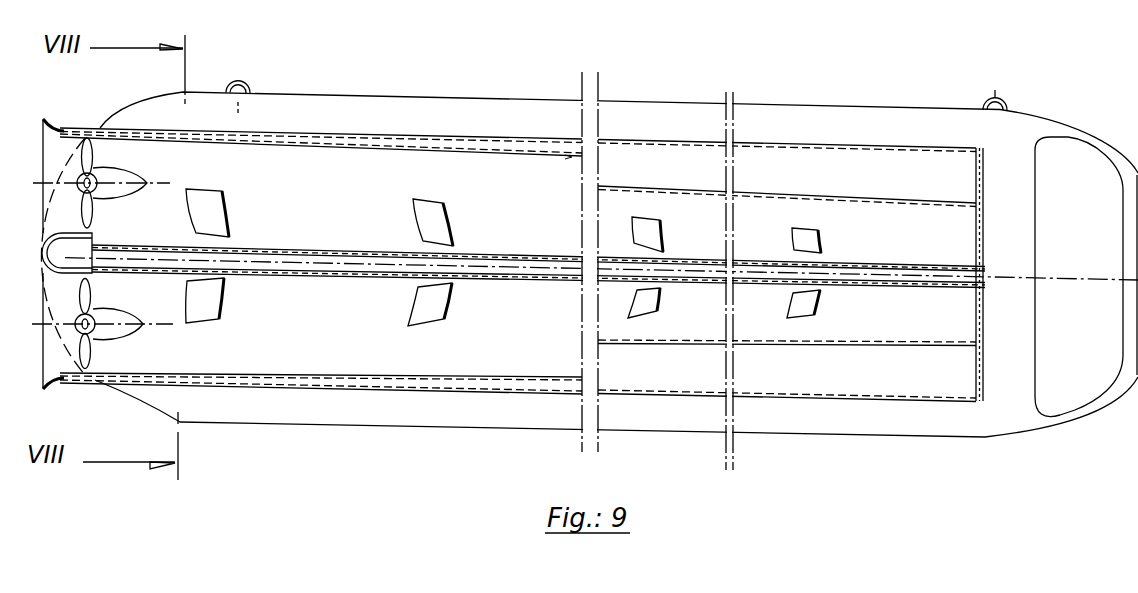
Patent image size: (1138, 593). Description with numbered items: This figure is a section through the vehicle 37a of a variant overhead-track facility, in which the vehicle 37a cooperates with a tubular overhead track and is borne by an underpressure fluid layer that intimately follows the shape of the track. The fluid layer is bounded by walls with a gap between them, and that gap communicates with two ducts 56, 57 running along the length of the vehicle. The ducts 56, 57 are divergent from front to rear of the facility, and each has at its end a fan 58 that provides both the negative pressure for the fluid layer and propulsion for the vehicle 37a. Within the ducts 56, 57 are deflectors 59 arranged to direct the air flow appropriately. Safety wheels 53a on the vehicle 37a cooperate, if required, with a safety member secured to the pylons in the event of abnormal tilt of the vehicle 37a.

The vehicle 37a is at (802, 426).
The safety wheels 53a is at (247, 85).
The duct 56 is at (385, 147).
The duct 57 is at (350, 276).
The fan 58 is at (115, 175).
The deflectors 59 is at (222, 207).